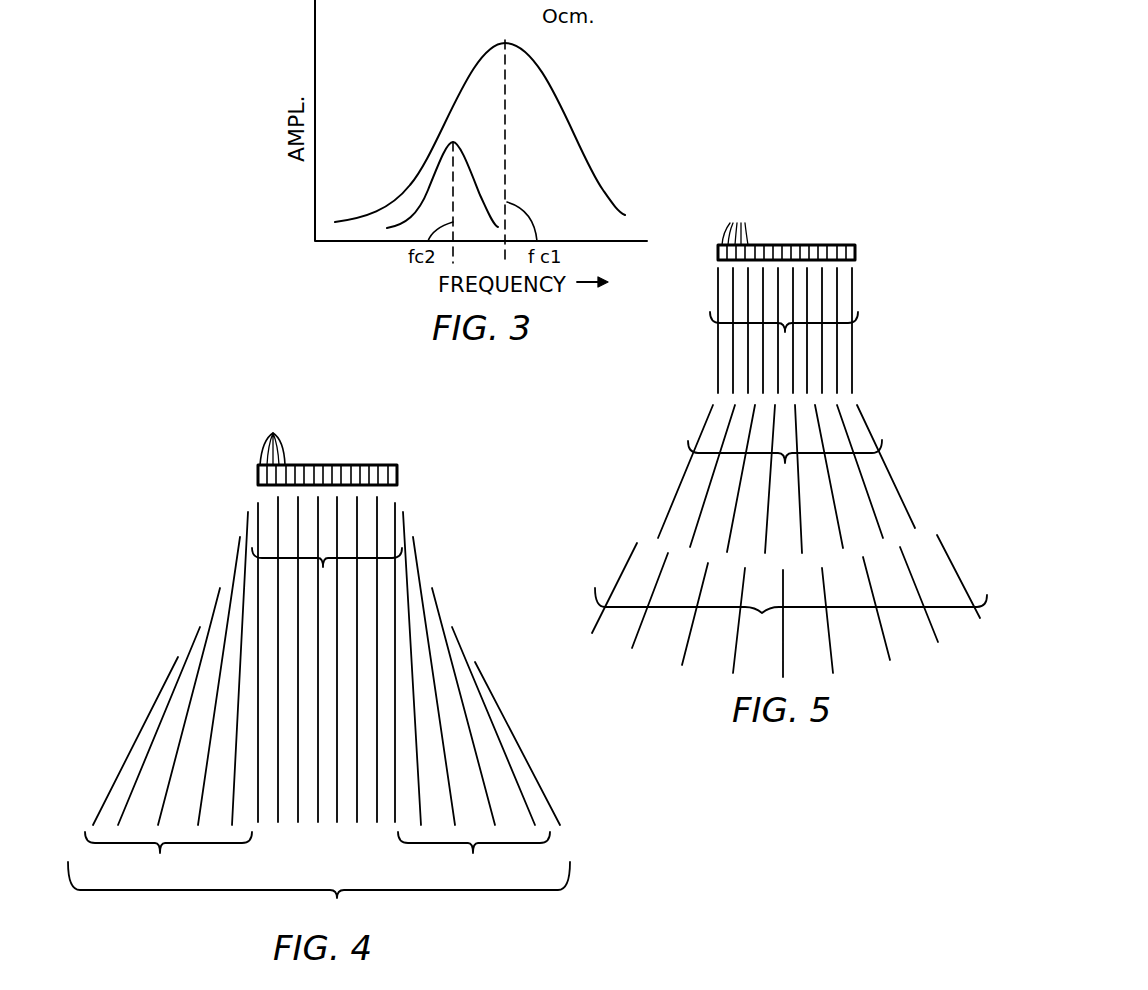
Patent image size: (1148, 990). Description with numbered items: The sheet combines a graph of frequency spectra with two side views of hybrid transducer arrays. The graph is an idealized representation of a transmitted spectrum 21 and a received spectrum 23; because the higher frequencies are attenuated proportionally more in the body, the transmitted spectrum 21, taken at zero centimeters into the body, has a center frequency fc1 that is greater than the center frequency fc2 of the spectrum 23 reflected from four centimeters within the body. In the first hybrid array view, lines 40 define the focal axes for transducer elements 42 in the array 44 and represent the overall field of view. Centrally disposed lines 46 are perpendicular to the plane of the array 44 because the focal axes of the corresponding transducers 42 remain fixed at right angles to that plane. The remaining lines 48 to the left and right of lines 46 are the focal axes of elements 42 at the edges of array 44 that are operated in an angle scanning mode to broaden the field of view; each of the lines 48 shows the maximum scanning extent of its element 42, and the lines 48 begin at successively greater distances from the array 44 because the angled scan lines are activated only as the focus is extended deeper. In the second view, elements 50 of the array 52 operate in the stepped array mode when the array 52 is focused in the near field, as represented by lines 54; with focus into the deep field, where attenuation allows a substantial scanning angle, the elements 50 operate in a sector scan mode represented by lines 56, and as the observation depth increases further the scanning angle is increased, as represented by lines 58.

In FIG. 3, the transmitted spectrum 21 is at (567, 128).
In FIG. 3, the received spectrum 23 is at (472, 165).
In FIG. 4, the lines defining focal axes 40 is at (319, 894).
In FIG. 4, the transducer elements 42 is at (275, 437).
In FIG. 4, the array 44 is at (397, 471).
In FIG. 4, the centrally disposed lines 46 is at (323, 567).
In FIG. 4, the remaining lines 48 is at (322, 696).
In FIG. 5, the elements 50 is at (735, 223).
In FIG. 5, the array 52 is at (855, 252).
In FIG. 5, the lines 54 is at (785, 332).
In FIG. 5, the lines 56 is at (785, 463).
In FIG. 5, the lines 58 is at (745, 612).